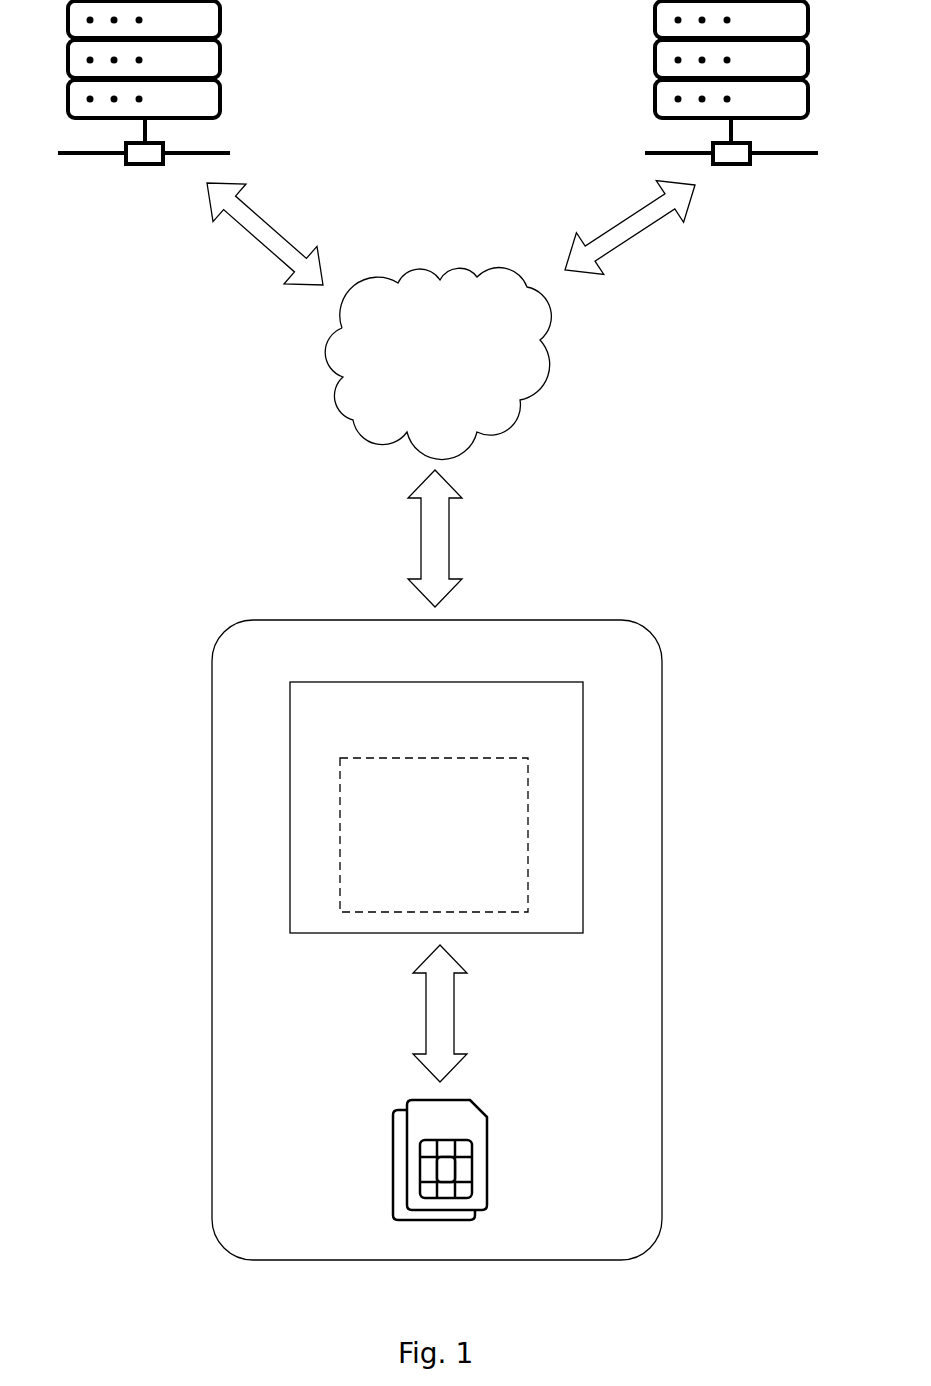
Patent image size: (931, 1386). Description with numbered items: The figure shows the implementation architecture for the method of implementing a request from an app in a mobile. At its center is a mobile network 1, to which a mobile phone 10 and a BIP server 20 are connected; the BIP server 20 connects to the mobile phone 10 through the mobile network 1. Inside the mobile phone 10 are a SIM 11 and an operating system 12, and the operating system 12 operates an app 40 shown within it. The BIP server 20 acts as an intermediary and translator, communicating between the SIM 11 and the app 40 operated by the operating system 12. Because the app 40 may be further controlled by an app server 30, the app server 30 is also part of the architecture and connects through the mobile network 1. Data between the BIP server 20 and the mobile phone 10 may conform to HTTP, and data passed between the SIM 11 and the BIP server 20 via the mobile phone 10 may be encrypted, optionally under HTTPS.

The mobile network 1 is at (442, 380).
The mobile phone 10 is at (523, 620).
The SIM 11 is at (487, 1158).
The operating system 12 is at (583, 805).
The BIP server 20 is at (220, 85).
The app server 30 is at (655, 85).
The app 40 is at (340, 850).